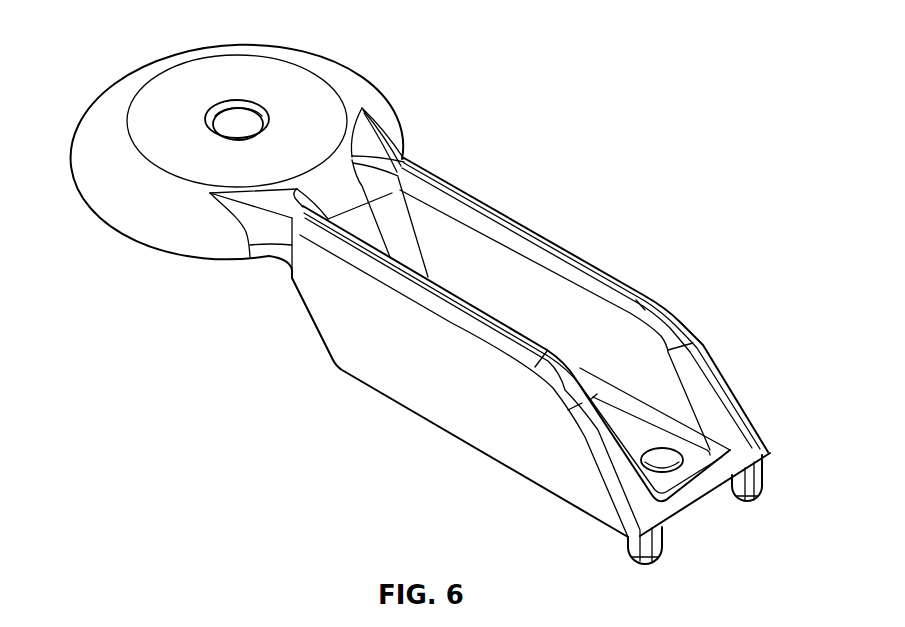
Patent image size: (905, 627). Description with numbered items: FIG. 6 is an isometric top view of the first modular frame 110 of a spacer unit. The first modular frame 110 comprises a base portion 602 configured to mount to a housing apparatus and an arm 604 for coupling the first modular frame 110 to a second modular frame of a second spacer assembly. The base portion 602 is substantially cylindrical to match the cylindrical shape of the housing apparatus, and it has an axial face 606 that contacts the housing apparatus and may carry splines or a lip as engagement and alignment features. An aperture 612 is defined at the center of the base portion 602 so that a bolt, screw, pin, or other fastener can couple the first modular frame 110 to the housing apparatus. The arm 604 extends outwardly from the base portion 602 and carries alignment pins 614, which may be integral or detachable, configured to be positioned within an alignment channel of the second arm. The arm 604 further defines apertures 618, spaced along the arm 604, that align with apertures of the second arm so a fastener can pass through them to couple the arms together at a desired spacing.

The first modular frame 110 is at (619, 68).
The base portion 602 is at (92, 112).
The arm 604 is at (452, 419).
The axial face 606 is at (187, 263).
The aperture 612 is at (232, 118).
The alignment pins 614 is at (659, 545).
The apertures 618 is at (660, 463).